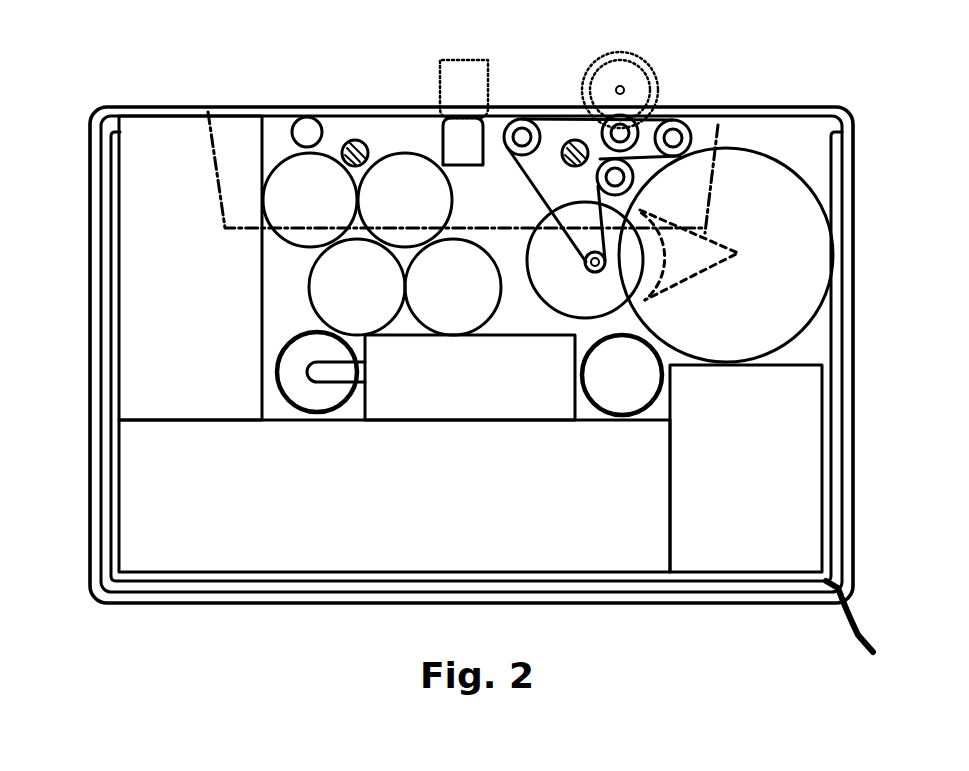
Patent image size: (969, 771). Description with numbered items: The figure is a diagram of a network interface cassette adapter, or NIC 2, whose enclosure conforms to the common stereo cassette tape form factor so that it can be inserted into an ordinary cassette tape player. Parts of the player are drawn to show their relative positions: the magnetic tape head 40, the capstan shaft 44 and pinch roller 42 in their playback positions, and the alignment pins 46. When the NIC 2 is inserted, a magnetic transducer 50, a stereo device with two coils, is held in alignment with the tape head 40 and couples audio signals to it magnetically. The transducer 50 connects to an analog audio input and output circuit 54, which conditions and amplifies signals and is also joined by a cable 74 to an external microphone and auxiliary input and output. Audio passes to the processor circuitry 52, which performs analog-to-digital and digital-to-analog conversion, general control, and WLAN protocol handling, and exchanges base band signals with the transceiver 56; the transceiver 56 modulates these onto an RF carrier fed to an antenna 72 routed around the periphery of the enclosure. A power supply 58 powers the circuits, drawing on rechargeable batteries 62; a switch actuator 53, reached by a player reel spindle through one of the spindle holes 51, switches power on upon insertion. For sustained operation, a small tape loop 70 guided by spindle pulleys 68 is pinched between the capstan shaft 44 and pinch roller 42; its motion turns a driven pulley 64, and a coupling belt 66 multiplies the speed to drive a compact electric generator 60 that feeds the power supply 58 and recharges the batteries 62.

The network interface cassette adapter 2 is at (92, 600).
The magnetic tape head 40 is at (450, 60).
The pinch roller 42 is at (637, 55).
The capstan shaft 44 is at (655, 130).
The alignment pins 46 is at (358, 140).
The magnetic transducer 50 is at (443, 140).
The spindle holes 51 is at (305, 330).
The processor circuitry 52 is at (355, 570).
The switch actuator 53 is at (327, 383).
The audio input and output circuit 54 is at (820, 488).
The transceiver 56 is at (258, 333).
The power supply circuit 58 is at (573, 365).
The electric generator 60 is at (780, 155).
The batteries 62 is at (323, 315).
The driven pulley 64 is at (547, 307).
The coupling belt 66 is at (707, 235).
The spindle pulleys 68 is at (597, 180).
The tape loop 70 is at (533, 193).
The antenna 72 is at (97, 182).
The cable 74 is at (850, 640).